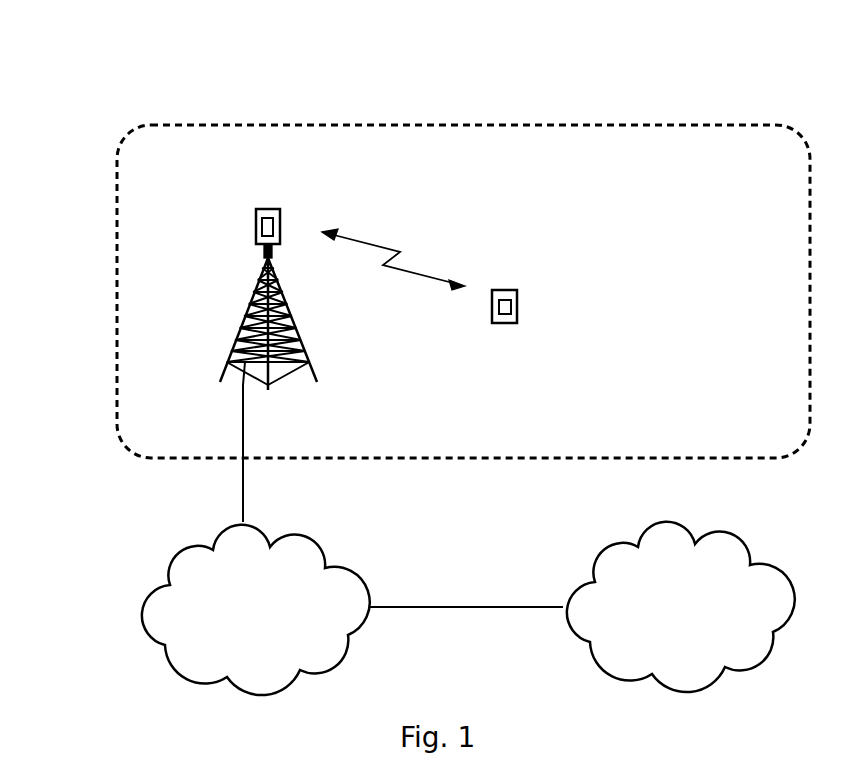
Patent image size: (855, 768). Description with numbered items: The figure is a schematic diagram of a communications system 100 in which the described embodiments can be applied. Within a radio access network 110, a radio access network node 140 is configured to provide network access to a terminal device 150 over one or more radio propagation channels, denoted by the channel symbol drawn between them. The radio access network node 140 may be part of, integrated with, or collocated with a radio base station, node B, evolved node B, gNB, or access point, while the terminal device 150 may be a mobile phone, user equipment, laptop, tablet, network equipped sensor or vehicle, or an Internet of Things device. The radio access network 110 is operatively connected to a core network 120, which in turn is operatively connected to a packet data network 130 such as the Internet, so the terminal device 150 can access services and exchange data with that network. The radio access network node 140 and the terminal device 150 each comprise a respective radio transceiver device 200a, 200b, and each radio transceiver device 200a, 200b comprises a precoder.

The communications system 100 is at (221, 78).
The radio access network 110 is at (117, 292).
The core network 120 is at (256, 610).
The packet data network 130 is at (681, 607).
The radio access network node 140 is at (268, 208).
The terminal device 150 is at (500, 289).
The radio transceiver device 200a is at (262, 228).
The radio transceiver device 200b is at (511, 310).